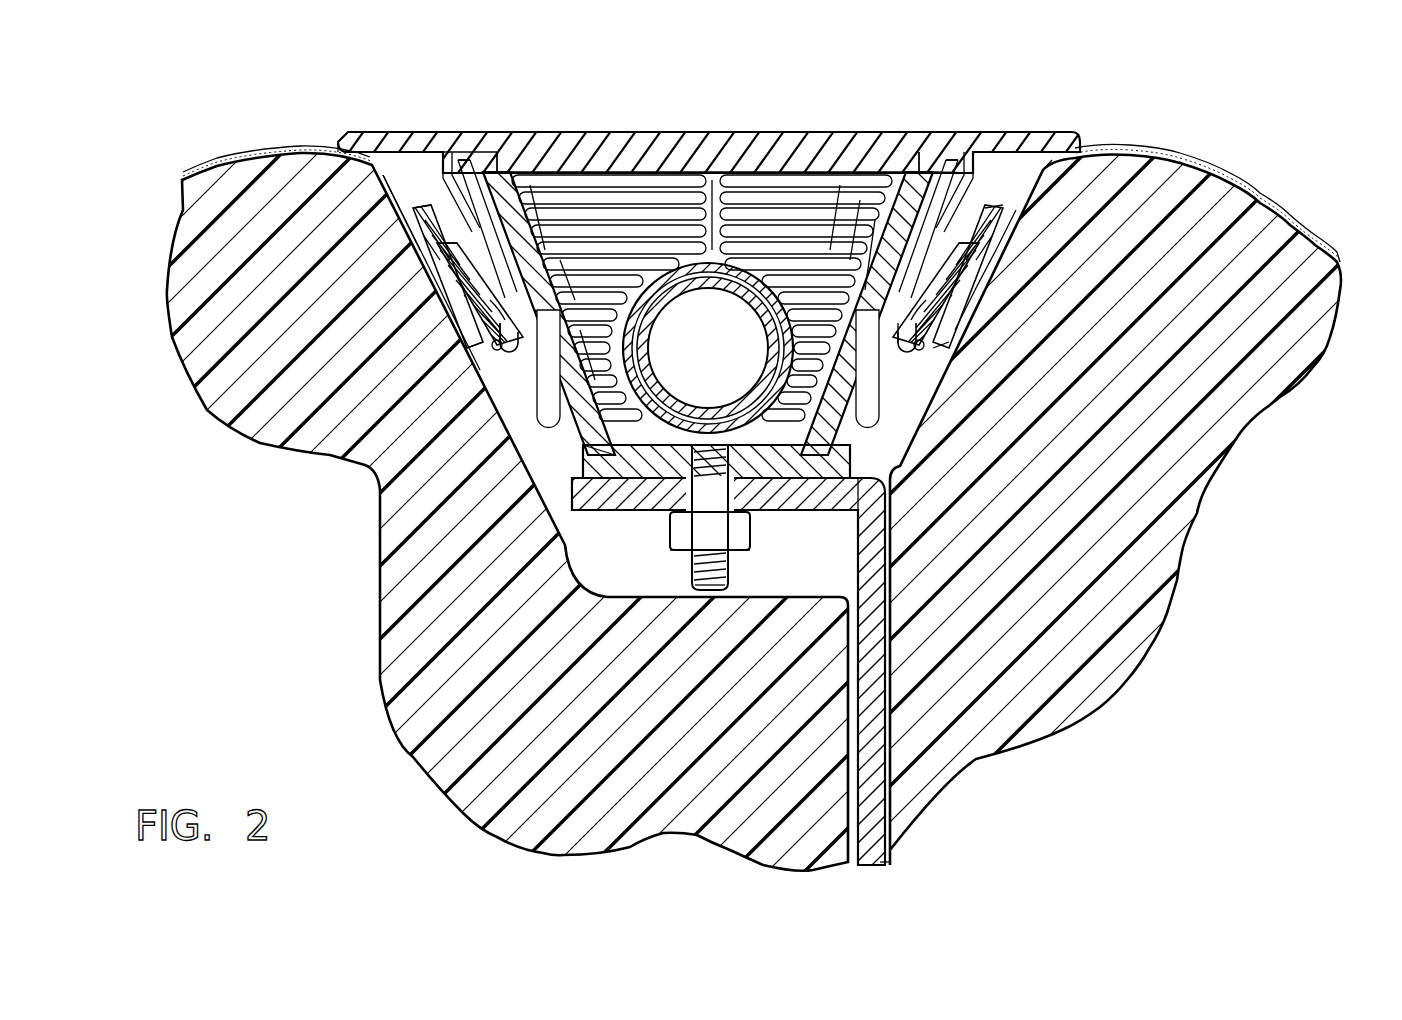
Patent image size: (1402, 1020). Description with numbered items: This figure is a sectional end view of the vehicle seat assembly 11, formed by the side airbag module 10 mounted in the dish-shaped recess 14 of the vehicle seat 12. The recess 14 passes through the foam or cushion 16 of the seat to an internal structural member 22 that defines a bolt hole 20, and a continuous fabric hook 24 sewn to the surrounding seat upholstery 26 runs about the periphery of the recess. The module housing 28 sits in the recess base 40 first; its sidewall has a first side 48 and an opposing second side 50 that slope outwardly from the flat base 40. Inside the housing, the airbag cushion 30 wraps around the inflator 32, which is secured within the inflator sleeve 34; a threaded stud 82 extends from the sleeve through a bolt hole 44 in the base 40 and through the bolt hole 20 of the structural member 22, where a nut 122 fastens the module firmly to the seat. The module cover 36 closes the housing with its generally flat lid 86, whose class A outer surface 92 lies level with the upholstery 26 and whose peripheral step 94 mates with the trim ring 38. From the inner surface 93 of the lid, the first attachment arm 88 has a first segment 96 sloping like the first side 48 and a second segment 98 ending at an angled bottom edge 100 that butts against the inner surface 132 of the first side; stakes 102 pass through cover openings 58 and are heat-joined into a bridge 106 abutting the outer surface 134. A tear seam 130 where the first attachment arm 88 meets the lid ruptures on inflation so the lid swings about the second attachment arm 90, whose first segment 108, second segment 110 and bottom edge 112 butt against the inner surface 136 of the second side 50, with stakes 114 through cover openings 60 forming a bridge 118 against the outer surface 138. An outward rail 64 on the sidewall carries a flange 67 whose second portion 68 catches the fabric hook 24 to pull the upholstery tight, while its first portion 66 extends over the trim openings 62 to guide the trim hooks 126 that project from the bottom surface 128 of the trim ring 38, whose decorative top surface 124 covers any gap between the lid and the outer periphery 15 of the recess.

The side airbag module 10 is at (665, 70).
The vehicle seat assembly 11 is at (1166, 722).
The vehicle seat 12 is at (1296, 205).
The dish-shaped recess 14 is at (646, 593).
The outer periphery of the recess 15 is at (360, 135).
The foam or cushion 16 is at (392, 712).
The bolt hole 20 is at (703, 510).
The internal structural member 22 is at (490, 600).
The fabric hook 24 is at (503, 354).
The seat upholstery 26 is at (215, 158).
The module housing 28 is at (480, 150).
The airbag cushion 30 is at (790, 285).
The inflator 32 is at (765, 280).
The inflator sleeve 34 is at (730, 295).
The module cover 36 is at (800, 130).
The trim ring 38 is at (1035, 131).
The base 40 is at (667, 485).
The bolt hole 44 is at (750, 512).
The first side of the sidewall 48 is at (560, 428).
The second side of the sidewall 50 is at (830, 442).
The cover openings 58 is at (545, 380).
The cover openings 60 is at (940, 345).
The trim openings 62 is at (430, 205).
The rail 64 is at (470, 290).
The first portion of the flange 66 is at (420, 235).
The flange 67 is at (435, 262).
The second portion of the flange 68 is at (482, 310).
The threaded stud 82 is at (728, 580).
The lid 86 is at (825, 200).
The first attachment arm 88 is at (540, 258).
The second attachment arm 90 is at (978, 235).
The outer surface of the lid 92 is at (924, 200).
The inner surface of the lid 93 is at (712, 255).
The peripheral step 94 is at (962, 180).
The first segment of the first attachment arm 96 is at (572, 240).
The second segment of the first attachment arm 98 is at (587, 300).
The bottom edge 100 is at (605, 280).
The stakes 102 is at (470, 345).
The bridge 106 is at (492, 332).
The first segment of the second attachment arm 108 is at (905, 190).
The second segment of the second attachment arm 110 is at (868, 285).
The bottom edge 112 is at (852, 255).
The stakes 114 is at (935, 330).
The bridge 118 is at (915, 355).
The nut 122 is at (735, 546).
The decorative top surface 124 is at (1062, 138).
The trim hooks 126 is at (440, 150).
The bottom surface 128 is at (1076, 151).
The tear seam 130 is at (515, 172).
The inner surface of the first side 132 is at (640, 482).
The outer surface of the first side 134 is at (580, 420).
The inner surface of the second side 136 is at (855, 484).
The outer surface of the second side 138 is at (850, 432).